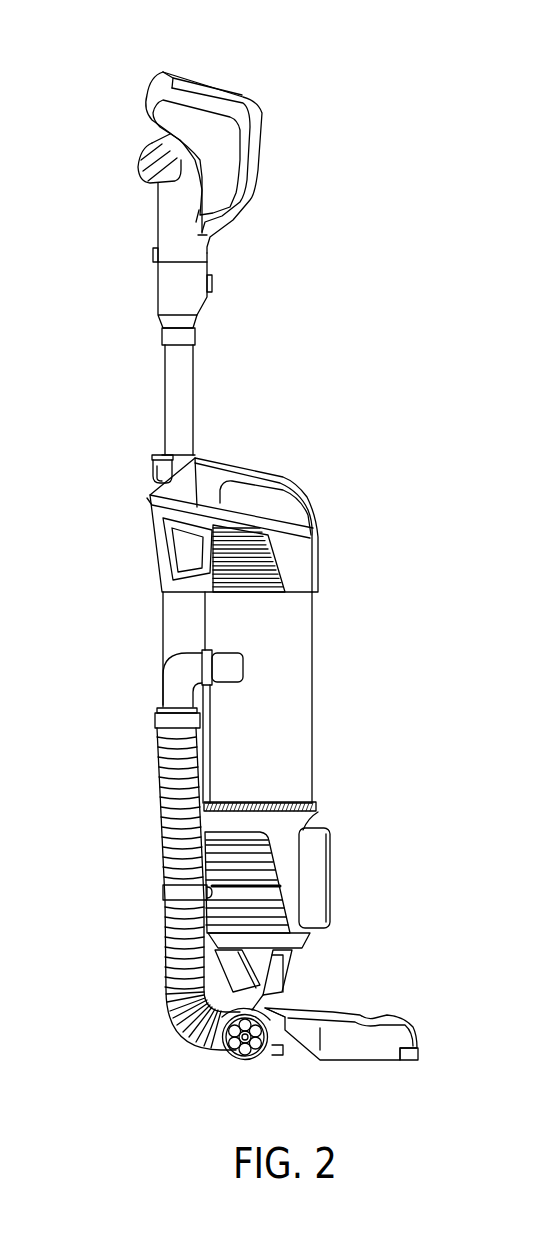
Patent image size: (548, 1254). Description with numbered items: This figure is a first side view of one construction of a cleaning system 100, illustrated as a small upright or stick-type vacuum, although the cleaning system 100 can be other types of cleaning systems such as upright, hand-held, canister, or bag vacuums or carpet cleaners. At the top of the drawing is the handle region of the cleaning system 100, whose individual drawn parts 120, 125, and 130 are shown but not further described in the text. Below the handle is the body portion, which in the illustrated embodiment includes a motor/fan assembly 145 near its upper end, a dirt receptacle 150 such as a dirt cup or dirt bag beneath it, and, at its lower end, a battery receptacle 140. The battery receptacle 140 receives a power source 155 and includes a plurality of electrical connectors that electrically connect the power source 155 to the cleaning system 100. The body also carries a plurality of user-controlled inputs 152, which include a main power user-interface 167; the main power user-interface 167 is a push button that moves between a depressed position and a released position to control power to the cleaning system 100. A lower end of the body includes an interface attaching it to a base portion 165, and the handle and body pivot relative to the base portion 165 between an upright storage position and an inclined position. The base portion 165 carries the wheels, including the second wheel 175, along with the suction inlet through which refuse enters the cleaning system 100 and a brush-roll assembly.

The cleaning system 100 is at (266, 70).
The handle grip 120 is at (139, 117).
The handle body 125 is at (149, 272).
The handle loop 130 is at (213, 86).
The battery receptacle 140 is at (324, 811).
The motor/fan assembly 145 is at (314, 539).
The dirt receptacle 150 is at (313, 722).
The user-controlled inputs 152 is at (142, 440).
The power source 155 is at (318, 892).
The base portion 165 is at (366, 1000).
The main power user-interface 167 is at (158, 496).
The second wheel 175 is at (240, 1046).